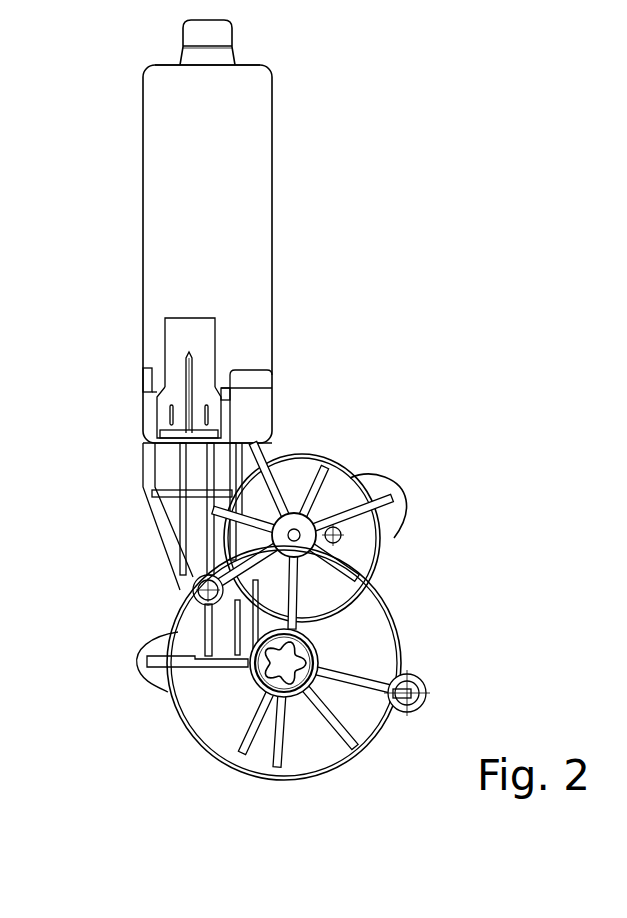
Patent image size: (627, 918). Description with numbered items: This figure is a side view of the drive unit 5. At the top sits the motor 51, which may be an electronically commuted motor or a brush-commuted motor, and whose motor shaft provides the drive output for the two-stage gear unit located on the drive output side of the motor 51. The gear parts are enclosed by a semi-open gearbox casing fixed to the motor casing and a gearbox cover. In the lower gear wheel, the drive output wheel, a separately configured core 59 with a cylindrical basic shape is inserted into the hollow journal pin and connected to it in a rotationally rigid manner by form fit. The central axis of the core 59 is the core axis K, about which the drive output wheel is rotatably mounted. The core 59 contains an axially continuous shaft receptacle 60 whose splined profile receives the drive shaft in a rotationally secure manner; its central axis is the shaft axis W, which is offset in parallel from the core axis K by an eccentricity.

The motor 51 is at (258, 158).
The drive unit 5 is at (330, 333).
The core 59 is at (248, 668).
The shaft receptacle 60 is at (318, 660).
The shaft axis W is at (263, 677).
The core axis K is at (258, 687).